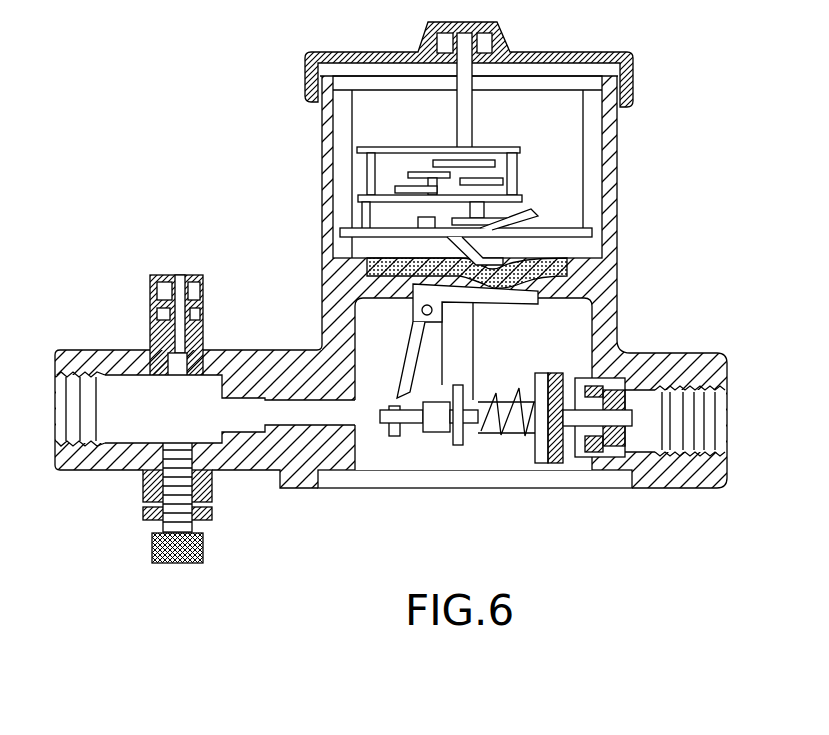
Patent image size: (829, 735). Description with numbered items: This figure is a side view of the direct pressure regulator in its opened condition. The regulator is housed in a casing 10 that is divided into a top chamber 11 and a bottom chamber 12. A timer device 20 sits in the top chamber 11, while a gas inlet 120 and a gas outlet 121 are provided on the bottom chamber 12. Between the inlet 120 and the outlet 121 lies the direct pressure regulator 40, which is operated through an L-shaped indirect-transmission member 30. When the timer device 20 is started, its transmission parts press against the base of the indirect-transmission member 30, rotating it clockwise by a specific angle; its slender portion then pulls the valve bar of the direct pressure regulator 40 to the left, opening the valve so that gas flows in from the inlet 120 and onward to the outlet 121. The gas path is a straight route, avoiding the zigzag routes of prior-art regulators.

The casing 10 is at (636, 272).
The top chamber 11 is at (542, 125).
The bottom chamber 12 is at (542, 322).
The timer device 20 is at (526, 184).
The indirect-transmission member 30 is at (387, 331).
The direct pressure regulator 40 is at (493, 437).
The gas inlet 120 is at (680, 432).
The gas outlet 121 is at (122, 388).